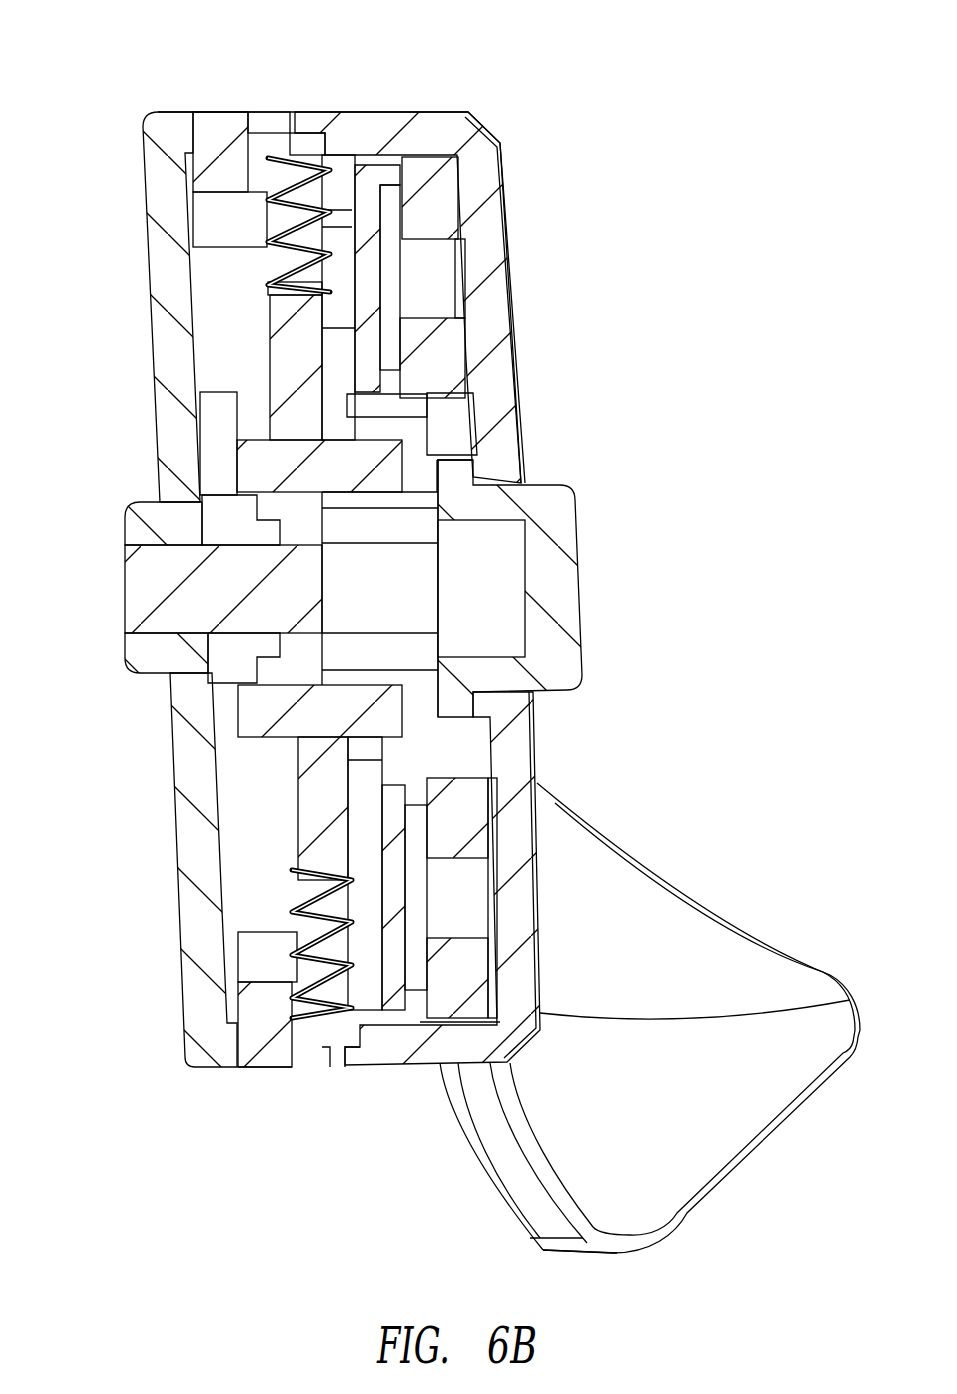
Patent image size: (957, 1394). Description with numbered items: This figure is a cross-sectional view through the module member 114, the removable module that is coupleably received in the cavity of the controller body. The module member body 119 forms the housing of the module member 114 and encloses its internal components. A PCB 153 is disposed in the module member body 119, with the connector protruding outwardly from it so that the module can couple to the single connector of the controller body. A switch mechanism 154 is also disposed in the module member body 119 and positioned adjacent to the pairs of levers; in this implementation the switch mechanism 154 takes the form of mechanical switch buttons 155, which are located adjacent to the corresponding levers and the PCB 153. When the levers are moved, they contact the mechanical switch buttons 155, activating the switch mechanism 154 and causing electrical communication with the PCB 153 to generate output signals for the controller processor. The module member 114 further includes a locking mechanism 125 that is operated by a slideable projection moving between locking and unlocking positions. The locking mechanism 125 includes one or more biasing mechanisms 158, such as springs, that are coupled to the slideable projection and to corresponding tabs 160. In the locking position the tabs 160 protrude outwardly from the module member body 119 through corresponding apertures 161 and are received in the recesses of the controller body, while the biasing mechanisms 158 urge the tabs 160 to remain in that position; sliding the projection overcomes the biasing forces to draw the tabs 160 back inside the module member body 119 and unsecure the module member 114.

The module member 114 is at (613, 187).
The module member body 119 is at (165, 212).
The locking mechanism 125 is at (338, 1070).
The PCB 153 is at (137, 582).
The switch mechanism 154 is at (365, 818).
The mechanical switch buttons 155 is at (378, 885).
The biasing mechanism 158 is at (277, 158).
The tabs 160 is at (207, 137).
The apertures 161 is at (222, 112).